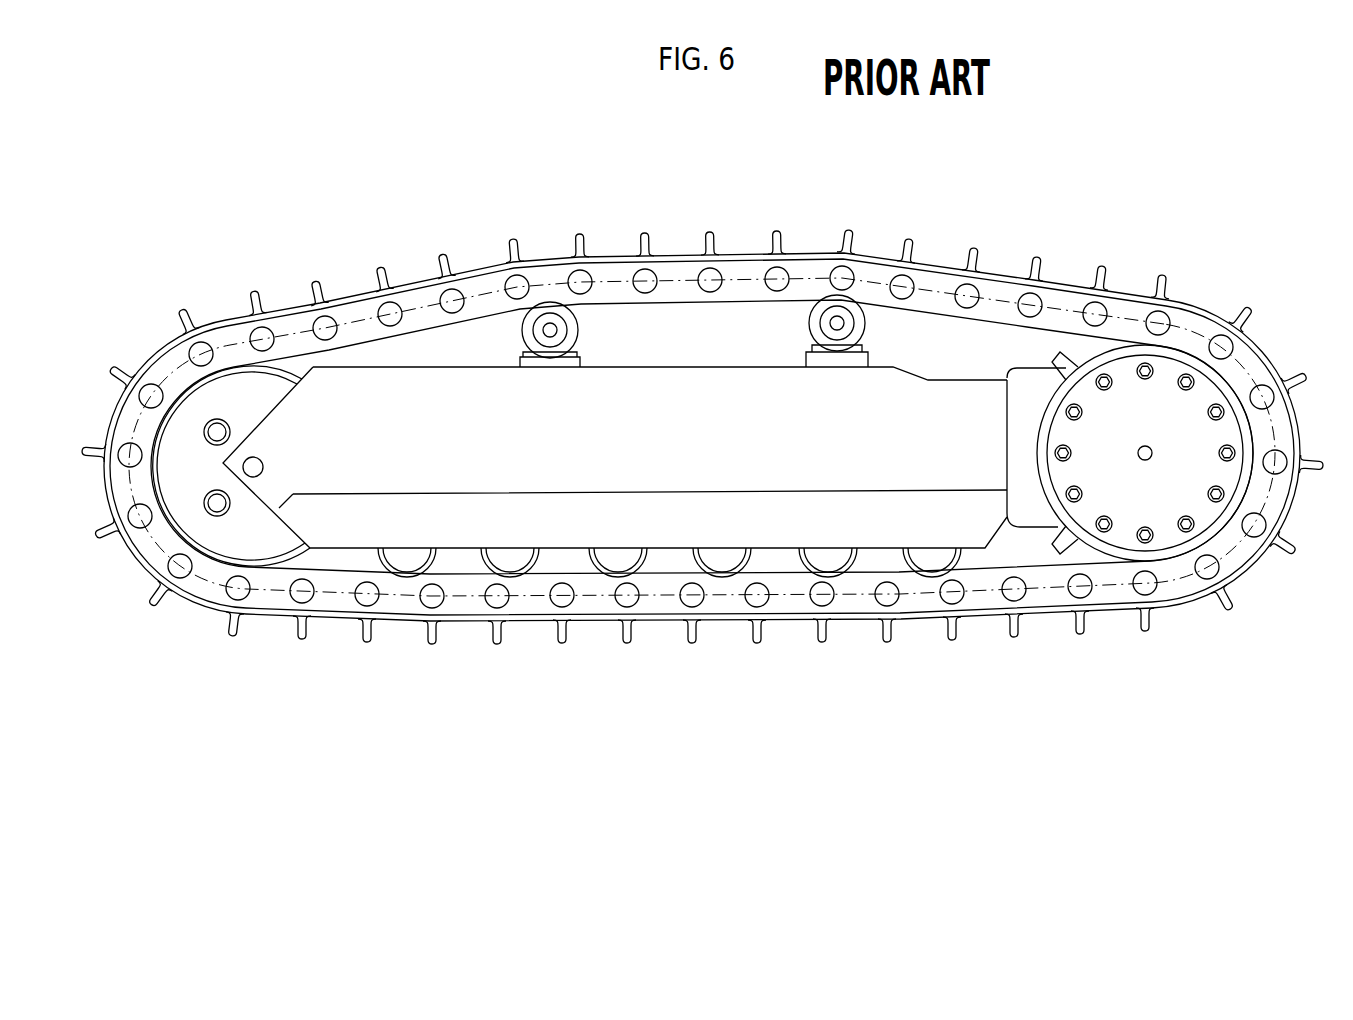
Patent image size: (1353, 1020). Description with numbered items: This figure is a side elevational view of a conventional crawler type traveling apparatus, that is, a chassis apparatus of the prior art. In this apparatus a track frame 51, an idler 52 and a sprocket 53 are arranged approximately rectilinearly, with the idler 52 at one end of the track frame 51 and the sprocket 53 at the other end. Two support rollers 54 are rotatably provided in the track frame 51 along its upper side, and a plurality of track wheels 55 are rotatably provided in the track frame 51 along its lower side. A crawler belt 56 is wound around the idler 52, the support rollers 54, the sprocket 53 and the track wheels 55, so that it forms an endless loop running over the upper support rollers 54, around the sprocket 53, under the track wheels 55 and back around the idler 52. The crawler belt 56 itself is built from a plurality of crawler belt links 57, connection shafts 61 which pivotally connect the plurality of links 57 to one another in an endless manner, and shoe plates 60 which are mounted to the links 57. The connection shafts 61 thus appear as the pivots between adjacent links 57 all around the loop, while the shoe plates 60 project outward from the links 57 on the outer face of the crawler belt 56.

The track frame 51 is at (427, 377).
The idler 52 is at (236, 380).
The sprocket 53 is at (1183, 372).
The support roller 54 is at (543, 298).
The track wheel 55 is at (403, 588).
The crawler belt 56 is at (724, 640).
The crawler belt link 57 is at (357, 333).
The shoe plate 60 is at (343, 298).
The connection shaft 61 is at (458, 320).